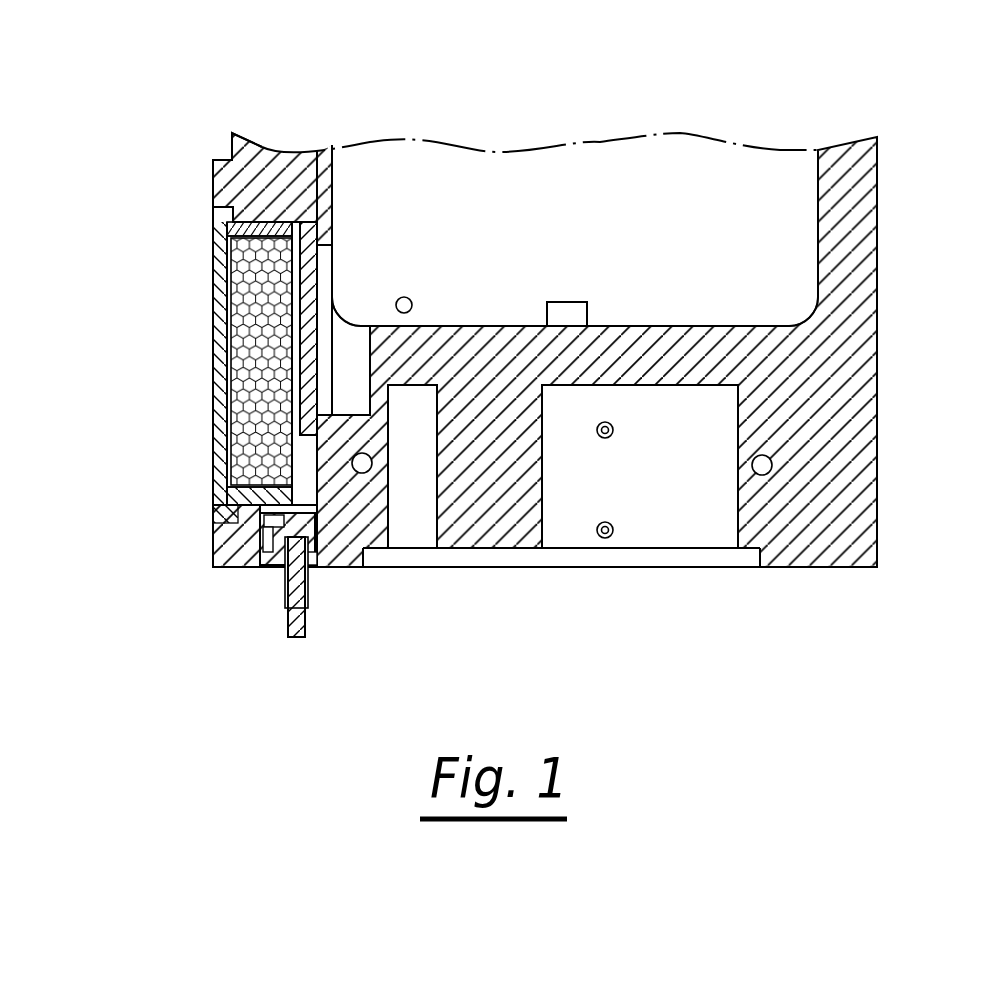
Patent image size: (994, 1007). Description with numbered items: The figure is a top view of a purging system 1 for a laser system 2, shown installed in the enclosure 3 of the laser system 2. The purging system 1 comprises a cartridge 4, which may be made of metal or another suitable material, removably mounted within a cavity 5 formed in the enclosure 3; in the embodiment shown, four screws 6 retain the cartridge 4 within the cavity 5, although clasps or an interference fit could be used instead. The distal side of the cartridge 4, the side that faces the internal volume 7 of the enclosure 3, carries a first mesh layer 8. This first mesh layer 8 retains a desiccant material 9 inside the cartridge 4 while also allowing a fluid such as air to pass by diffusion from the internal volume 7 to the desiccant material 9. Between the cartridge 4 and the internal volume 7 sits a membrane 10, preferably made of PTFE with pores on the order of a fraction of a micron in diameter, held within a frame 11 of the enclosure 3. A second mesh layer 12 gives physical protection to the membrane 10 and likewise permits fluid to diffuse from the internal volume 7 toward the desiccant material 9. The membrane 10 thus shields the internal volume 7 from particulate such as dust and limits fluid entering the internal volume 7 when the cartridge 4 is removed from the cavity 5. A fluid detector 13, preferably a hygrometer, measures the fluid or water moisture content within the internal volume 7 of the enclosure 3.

The purging system 1 is at (165, 256).
The laser system 2 is at (806, 90).
The enclosure 3 is at (273, 170).
The cartridge 4 is at (236, 511).
The cavity 5 is at (310, 455).
The screws 6 is at (238, 208).
The internal volume 7 is at (575, 269).
The first mesh layer 8 is at (284, 313).
The desiccant material 9 is at (253, 378).
The membrane 10 is at (303, 226).
The frame 11 is at (325, 490).
The second mesh layer 12 is at (320, 232).
The fluid detector 13 is at (550, 312).